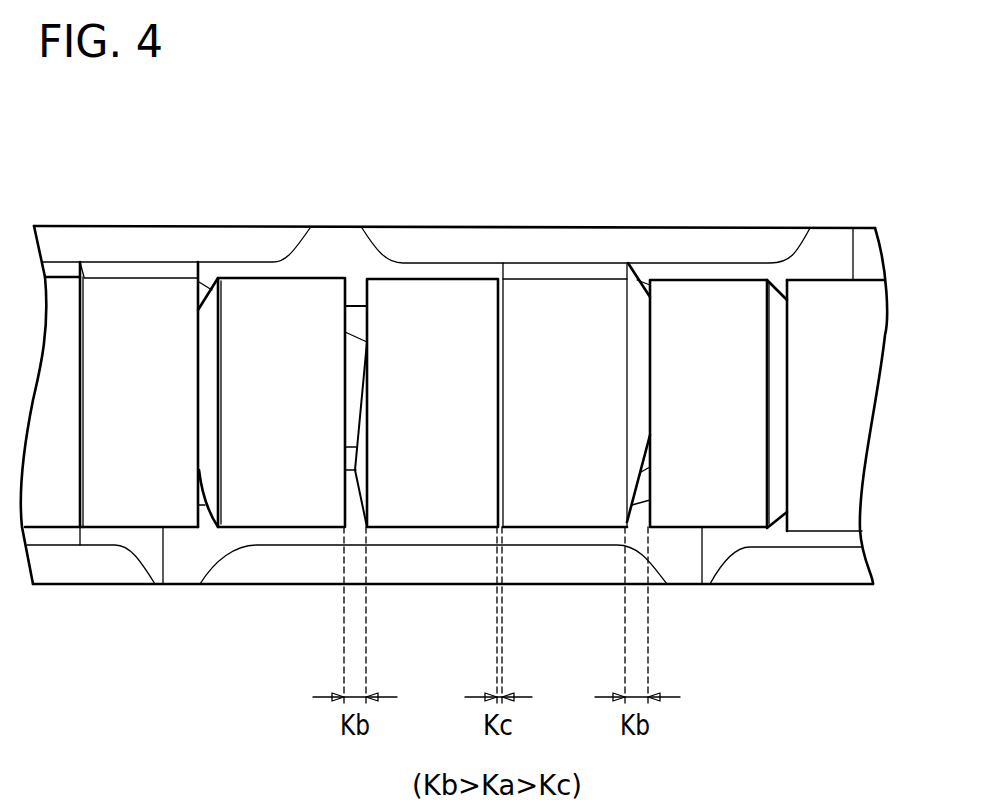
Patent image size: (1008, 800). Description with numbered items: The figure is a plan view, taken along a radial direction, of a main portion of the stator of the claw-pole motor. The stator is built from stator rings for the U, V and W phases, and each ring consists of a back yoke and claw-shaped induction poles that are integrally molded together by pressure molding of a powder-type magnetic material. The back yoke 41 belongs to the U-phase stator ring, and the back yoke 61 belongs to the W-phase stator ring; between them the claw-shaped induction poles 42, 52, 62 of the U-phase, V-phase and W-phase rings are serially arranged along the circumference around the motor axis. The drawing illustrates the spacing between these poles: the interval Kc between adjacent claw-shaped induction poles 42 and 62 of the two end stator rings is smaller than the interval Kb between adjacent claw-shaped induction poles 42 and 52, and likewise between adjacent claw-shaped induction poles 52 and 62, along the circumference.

The back yoke 41 is at (617, 238).
The claw-shaped induction pole 42 is at (562, 333).
The claw-shaped induction pole 52 is at (279, 490).
The back yoke 61 is at (462, 565).
The claw-shaped induction pole 62 is at (437, 483).